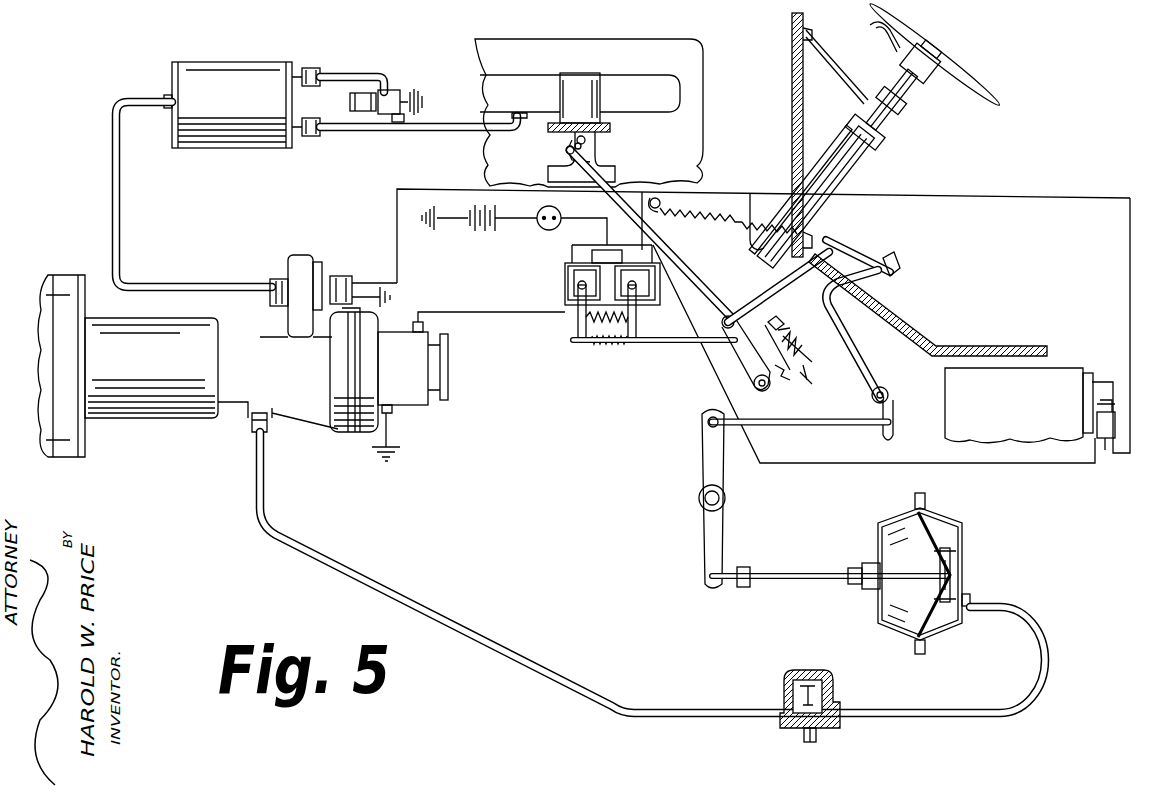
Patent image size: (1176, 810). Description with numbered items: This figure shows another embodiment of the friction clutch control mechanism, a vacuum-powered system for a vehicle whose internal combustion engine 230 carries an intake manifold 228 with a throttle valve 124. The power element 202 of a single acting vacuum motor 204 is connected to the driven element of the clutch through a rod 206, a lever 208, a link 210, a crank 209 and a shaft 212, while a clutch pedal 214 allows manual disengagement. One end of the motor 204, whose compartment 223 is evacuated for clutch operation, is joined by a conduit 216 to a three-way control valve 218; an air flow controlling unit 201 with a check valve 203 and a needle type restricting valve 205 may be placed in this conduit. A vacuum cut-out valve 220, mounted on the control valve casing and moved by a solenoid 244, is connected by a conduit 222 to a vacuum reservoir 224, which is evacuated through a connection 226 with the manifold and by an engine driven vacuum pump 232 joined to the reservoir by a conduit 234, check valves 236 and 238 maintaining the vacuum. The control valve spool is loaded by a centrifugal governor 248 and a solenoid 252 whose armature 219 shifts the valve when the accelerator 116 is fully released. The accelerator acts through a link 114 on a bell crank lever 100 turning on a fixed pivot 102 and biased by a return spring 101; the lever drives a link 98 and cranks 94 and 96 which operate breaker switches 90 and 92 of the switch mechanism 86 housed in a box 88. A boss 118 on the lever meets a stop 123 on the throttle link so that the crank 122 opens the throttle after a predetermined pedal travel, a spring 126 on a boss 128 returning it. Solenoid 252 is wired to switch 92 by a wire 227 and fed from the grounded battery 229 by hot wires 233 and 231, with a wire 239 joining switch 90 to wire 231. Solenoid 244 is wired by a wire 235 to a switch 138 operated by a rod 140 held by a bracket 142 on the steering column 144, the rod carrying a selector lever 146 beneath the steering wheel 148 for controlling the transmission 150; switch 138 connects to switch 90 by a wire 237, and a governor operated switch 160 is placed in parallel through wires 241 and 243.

The vacuum reservoir 224 is at (223, 66).
The check valve 236 is at (311, 66).
The conduit 234 is at (338, 78).
The engine driven vacuum pump 232 is at (402, 95).
The check valve 238 is at (314, 138).
The connection 226 is at (425, 130).
The conduit 222 is at (119, 220).
The vacuum cut-out valve 220 is at (300, 260).
The solenoid 244 is at (342, 280).
The armature 219 is at (445, 365).
The solenoid 252 is at (410, 395).
The centrifugal governor 248 is at (150, 420).
The three-way control valve 218 is at (300, 425).
The conduit 216 is at (552, 697).
The wire 227 is at (465, 315).
The internal combustion engine 230 is at (700, 60).
The intake manifold 228 is at (515, 85).
The throttle valve 124 is at (598, 138).
The crank 122 is at (572, 140).
The boss 128 is at (645, 192).
The spring 126 is at (708, 232).
The wire 237 is at (745, 250).
The switch 138 is at (790, 190).
The bracket 142 is at (838, 76).
The selector lever 146 is at (885, 48).
The steering column 144 is at (850, 165).
The rod 140 is at (822, 160).
The steering wheel 148 is at (970, 82).
The wire 235 is at (440, 193).
The wire 241 is at (1129, 237).
The wire 243 is at (1072, 466).
The battery 229 is at (470, 225).
The hot wire 231 is at (556, 218).
The wire 239 is at (597, 255).
The hot wire 233 is at (633, 255).
The switch mechanism 86 is at (555, 285).
The breaker switch 90 is at (570, 293).
The breaker switch 92 is at (640, 312).
The box 88 is at (585, 325).
The crank 94 is at (585, 340).
The crank 96 is at (640, 343).
The link 98 is at (690, 345).
The bell crank lever 100 is at (722, 320).
The fixed pivot 102 is at (766, 390).
The link 114 is at (758, 286).
The accelerator 116 is at (845, 252).
The clutch pedal 214 is at (868, 355).
The stop 123 is at (778, 322).
The boss 118 is at (800, 356).
The return spring 101 is at (807, 388).
The shaft 212 is at (888, 395).
The crank 209 is at (893, 416).
The link 210 is at (795, 425).
The lever 208 is at (720, 528).
The rod 206 is at (800, 575).
The vacuum motor 204 is at (945, 512).
The power element 202 is at (930, 527).
The compartment 223 is at (948, 632).
The air flow controlling unit 201 is at (812, 670).
The check valve 203 is at (798, 690).
The restricting valve 205 is at (804, 735).
The transmission 150 is at (1050, 370).
The governor operated switch 160 is at (1105, 450).